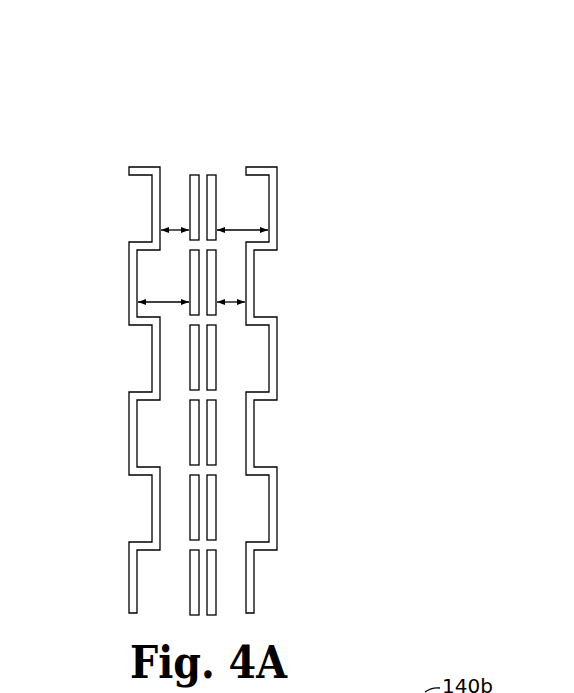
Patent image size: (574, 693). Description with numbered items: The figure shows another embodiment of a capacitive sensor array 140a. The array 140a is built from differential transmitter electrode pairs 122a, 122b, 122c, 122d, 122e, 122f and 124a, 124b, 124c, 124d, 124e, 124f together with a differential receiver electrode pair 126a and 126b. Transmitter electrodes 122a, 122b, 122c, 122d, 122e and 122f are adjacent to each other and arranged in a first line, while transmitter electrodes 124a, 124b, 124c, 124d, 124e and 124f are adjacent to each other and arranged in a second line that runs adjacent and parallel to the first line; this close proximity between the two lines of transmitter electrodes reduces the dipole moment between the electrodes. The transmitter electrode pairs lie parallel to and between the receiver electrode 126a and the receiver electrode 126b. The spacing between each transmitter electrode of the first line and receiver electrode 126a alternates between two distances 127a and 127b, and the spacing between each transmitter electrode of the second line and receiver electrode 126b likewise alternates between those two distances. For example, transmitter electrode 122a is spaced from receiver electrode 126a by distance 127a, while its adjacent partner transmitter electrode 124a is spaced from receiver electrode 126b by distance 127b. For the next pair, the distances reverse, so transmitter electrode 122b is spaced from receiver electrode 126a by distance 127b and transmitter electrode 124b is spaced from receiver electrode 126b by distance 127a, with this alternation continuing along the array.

The capacitive sensor array 140a is at (274, 58).
The receiver electrode 126a is at (145, 167).
The receiver electrode 126b is at (260, 167).
The transmitter electrode 122a is at (190, 206).
The transmitter electrode 122b is at (190, 277).
The transmitter electrode 122c is at (190, 340).
The transmitter electrode 122d is at (190, 417).
The transmitter electrode 122e is at (190, 485).
The transmitter electrode 122f is at (190, 575).
The transmitter electrode 124a is at (216, 200).
The transmitter electrode 124b is at (216, 268).
The transmitter electrode 124c is at (216, 338).
The transmitter electrode 124d is at (216, 413).
The transmitter electrode 124e is at (216, 500).
The transmitter electrode 124f is at (216, 563).
The distance 127a is at (170, 231).
The distance 127b is at (236, 230).